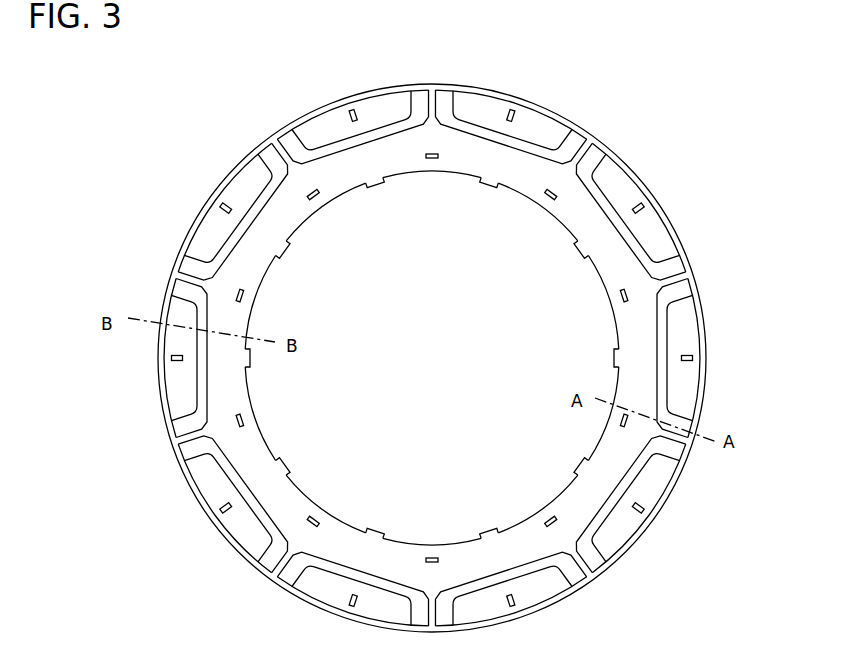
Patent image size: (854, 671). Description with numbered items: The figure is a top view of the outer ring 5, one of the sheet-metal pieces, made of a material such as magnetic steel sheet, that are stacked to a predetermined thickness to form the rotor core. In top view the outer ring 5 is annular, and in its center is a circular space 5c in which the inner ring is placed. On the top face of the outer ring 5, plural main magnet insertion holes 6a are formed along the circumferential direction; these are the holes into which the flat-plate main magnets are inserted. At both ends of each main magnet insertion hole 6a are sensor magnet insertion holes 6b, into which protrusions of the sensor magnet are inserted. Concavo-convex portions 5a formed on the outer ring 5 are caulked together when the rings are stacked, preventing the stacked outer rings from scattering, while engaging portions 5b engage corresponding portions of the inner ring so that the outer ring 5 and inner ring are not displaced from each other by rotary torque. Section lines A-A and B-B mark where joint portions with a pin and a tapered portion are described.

The outer ring 5 is at (523, 126).
The concavo-convex portions 5a is at (435, 160).
The engaging portions 5b is at (577, 257).
The circular space 5c is at (501, 482).
The main magnet insertion holes 6a is at (648, 192).
The sensor magnet insertion holes 6b is at (678, 242).